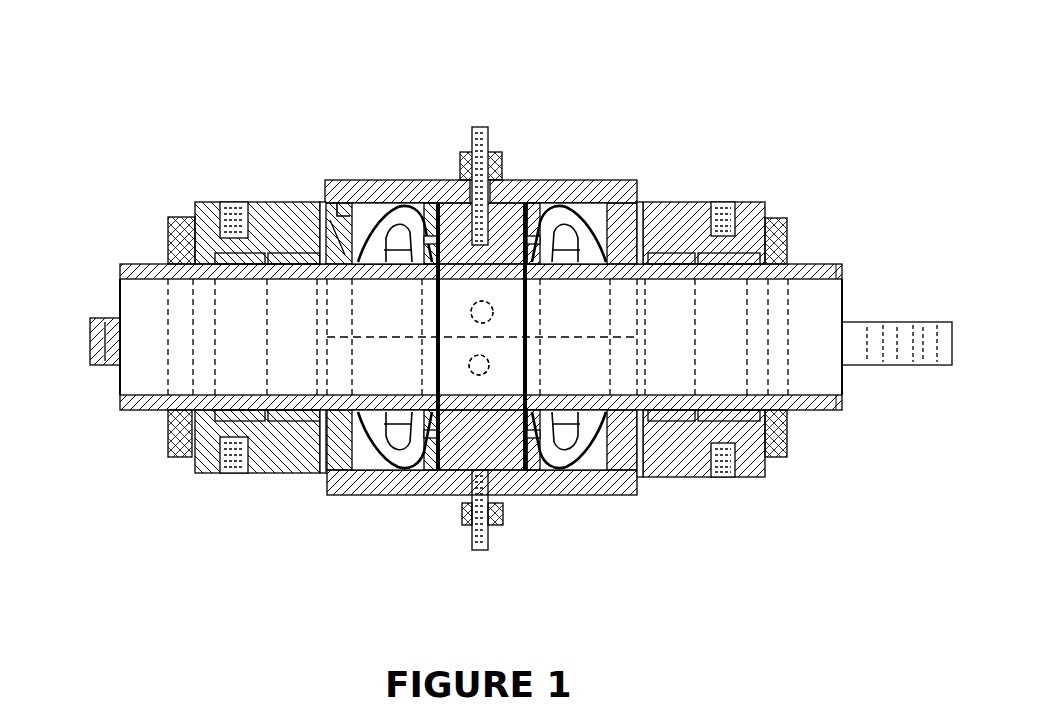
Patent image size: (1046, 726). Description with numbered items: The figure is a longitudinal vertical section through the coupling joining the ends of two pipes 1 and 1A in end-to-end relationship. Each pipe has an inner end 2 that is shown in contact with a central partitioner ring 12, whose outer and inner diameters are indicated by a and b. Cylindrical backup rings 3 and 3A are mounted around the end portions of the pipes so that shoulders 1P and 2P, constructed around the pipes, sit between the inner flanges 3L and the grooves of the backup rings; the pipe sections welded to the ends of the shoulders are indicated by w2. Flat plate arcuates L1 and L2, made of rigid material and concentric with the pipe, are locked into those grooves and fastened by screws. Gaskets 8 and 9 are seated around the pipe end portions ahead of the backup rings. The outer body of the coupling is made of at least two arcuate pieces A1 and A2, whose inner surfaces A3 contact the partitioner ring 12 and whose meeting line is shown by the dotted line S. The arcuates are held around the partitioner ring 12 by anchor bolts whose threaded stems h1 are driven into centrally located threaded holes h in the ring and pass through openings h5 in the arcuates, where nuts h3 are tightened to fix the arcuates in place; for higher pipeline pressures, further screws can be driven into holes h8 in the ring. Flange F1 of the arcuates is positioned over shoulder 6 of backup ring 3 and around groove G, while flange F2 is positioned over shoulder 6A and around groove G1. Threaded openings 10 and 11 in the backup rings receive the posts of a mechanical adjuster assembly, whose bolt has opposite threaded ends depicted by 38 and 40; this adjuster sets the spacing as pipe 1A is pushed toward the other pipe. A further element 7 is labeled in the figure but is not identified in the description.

The pipe 1 is at (120, 410).
The pipe 1A is at (843, 268).
The shoulder 1P is at (215, 392).
The shoulder 2P is at (737, 393).
The inner end of pipe 2 is at (420, 278).
The backup ring 3 is at (252, 215).
The backup ring 3A is at (770, 213).
The inner flange 3L is at (325, 268).
The shoulder 6 is at (360, 497).
The shoulder 6A is at (574, 184).
The shaft collar 7 is at (285, 393).
The gasket 8 is at (410, 476).
The gasket 9 is at (564, 270).
The threaded opening 10 is at (224, 208).
The threaded opening 11 is at (730, 206).
The partitioner ring 12 is at (441, 205).
The threaded end of bolt 38 is at (105, 366).
The threaded end of bolt 40 is at (868, 340).
The outer diameter of partitioner ring a is at (431, 210).
The inner diameter of partitioner ring b is at (477, 326).
The threaded hole h is at (497, 385).
The threaded stem h1 is at (482, 126).
The nut h3 is at (492, 176).
The opening h5 is at (504, 182).
The hole h8 is at (470, 367).
The arcuate piece A1 is at (387, 192).
The arcuate piece A2 is at (586, 497).
The inner surface of arcuate A3 is at (446, 480).
The flange F1 is at (362, 236).
The flange F2 is at (600, 472).
The groove G is at (330, 206).
The groove G1 is at (641, 205).
The flat plate arcuate L1 is at (170, 245).
The flat plate arcuate L2 is at (172, 438).
The meeting line S is at (362, 337).
The welded pipe section w2 is at (268, 393).